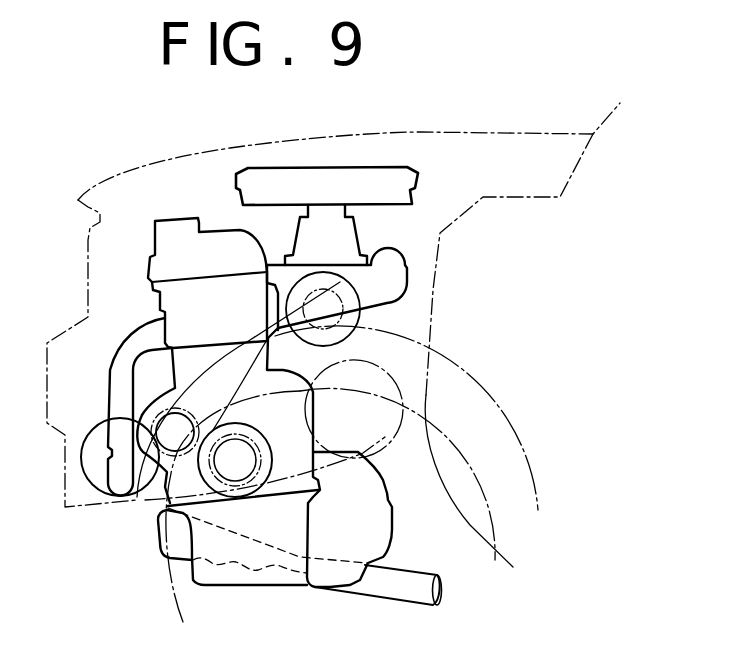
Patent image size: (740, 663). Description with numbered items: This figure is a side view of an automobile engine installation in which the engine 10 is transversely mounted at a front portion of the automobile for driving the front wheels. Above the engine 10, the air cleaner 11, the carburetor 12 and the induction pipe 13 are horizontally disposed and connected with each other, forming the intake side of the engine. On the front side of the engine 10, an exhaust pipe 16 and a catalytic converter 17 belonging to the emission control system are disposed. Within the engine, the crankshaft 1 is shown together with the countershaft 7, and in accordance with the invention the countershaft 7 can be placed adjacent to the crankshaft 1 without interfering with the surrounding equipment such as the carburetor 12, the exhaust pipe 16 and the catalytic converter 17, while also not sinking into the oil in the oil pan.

The crankshaft 1 is at (240, 467).
The countershaft 7 is at (184, 423).
The engine 10 is at (150, 257).
The air cleaner 11 is at (417, 192).
The carburetor 12 is at (358, 247).
The induction pipe 13 is at (392, 304).
The exhaust pipe 16 is at (120, 350).
The catalytic converter 17 is at (92, 427).